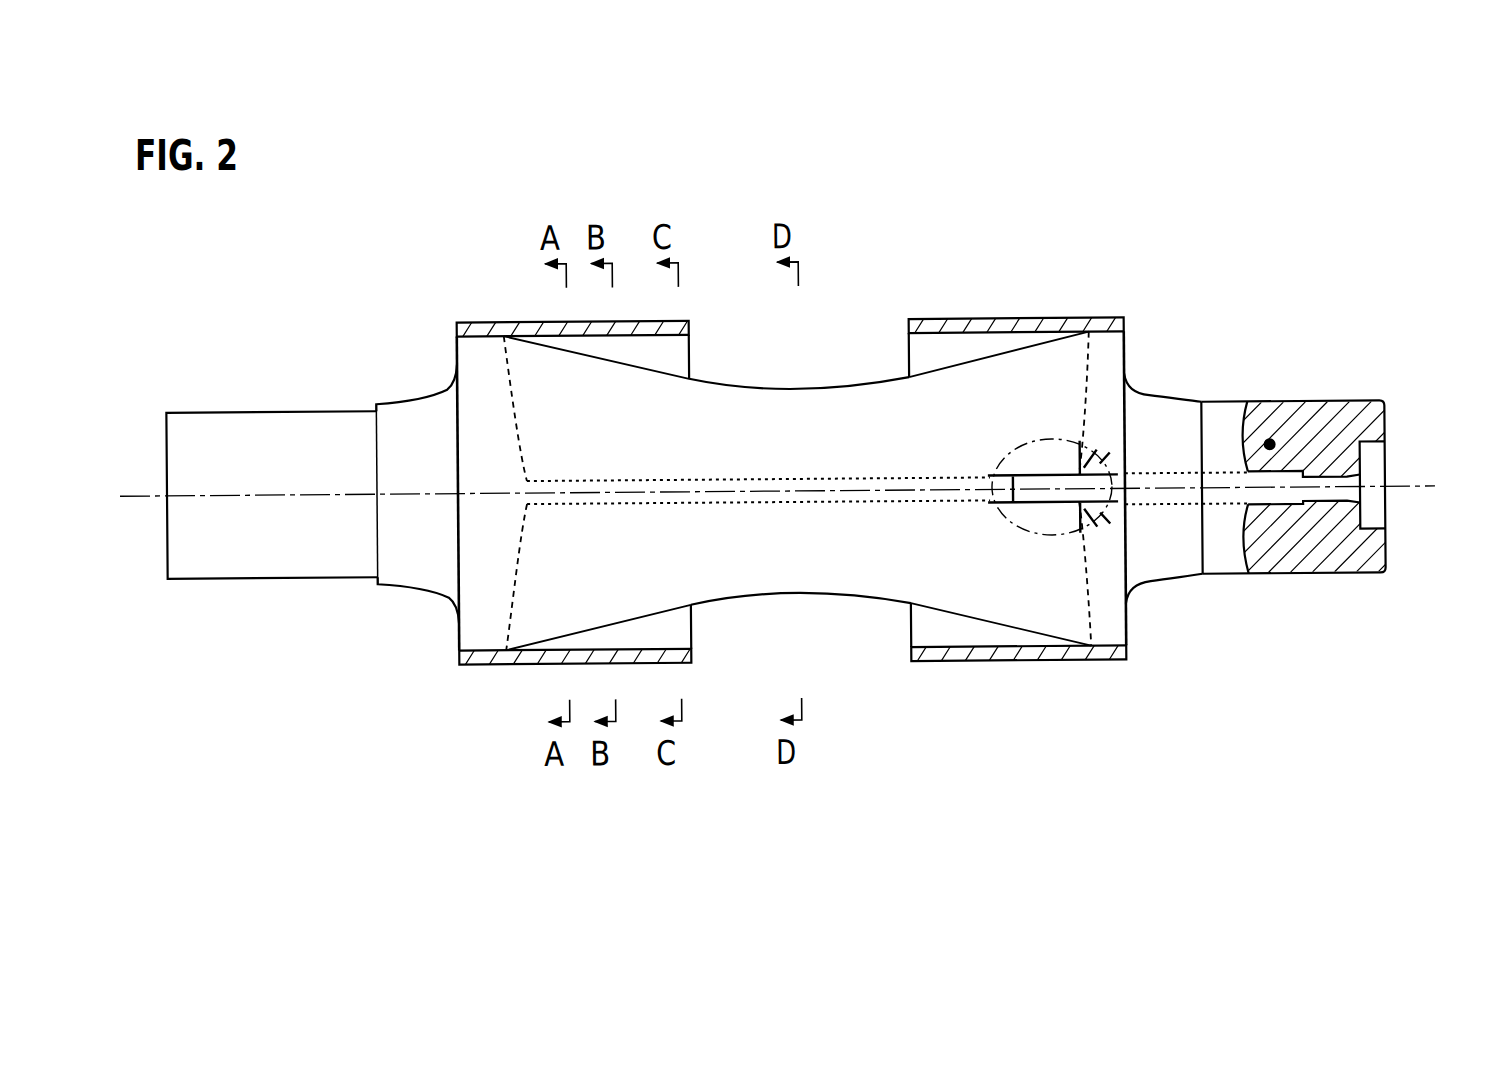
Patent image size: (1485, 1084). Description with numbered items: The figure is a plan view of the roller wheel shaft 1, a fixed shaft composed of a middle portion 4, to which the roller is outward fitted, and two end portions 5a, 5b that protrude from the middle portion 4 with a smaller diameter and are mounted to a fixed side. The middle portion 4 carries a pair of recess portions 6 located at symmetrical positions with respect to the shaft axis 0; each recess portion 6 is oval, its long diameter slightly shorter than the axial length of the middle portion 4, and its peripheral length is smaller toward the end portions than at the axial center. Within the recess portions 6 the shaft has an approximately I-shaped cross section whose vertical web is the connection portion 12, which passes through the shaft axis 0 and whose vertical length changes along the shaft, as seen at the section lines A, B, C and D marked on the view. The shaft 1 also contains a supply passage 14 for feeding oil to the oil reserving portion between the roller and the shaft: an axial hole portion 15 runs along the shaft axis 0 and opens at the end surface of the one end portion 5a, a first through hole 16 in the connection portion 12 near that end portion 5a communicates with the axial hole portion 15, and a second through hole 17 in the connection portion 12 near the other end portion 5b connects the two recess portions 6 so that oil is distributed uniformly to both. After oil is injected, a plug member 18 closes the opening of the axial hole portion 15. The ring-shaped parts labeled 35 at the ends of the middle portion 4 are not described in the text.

The roller wheel shaft 1 is at (1157, 333).
The middle portion 4 is at (825, 406).
The end portion 5a is at (1300, 577).
The end portion 5b is at (267, 568).
The recess portion 6 is at (515, 578).
The connection portion 12 is at (919, 512).
The supply passage 14 is at (1268, 447).
The axial hole portion 15 is at (1297, 475).
The first through hole 16 is at (1024, 516).
The second through hole 17 is at (560, 474).
The plug member 18 is at (1382, 462).
The flange ring 35 is at (1000, 320).
The shaft axis 0 is at (1410, 493).